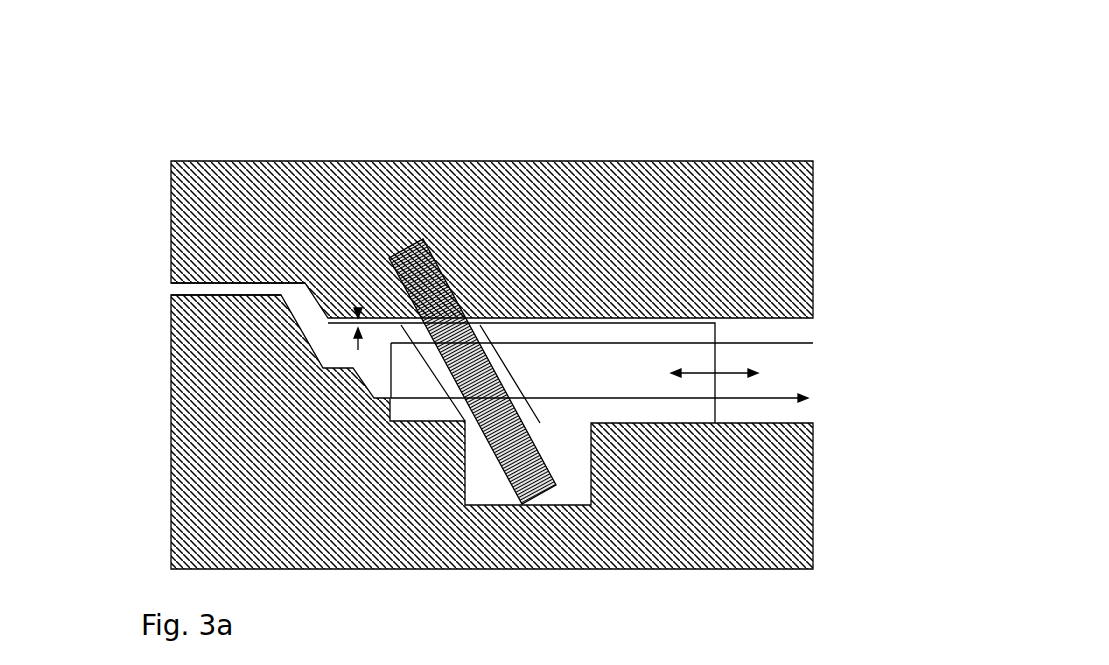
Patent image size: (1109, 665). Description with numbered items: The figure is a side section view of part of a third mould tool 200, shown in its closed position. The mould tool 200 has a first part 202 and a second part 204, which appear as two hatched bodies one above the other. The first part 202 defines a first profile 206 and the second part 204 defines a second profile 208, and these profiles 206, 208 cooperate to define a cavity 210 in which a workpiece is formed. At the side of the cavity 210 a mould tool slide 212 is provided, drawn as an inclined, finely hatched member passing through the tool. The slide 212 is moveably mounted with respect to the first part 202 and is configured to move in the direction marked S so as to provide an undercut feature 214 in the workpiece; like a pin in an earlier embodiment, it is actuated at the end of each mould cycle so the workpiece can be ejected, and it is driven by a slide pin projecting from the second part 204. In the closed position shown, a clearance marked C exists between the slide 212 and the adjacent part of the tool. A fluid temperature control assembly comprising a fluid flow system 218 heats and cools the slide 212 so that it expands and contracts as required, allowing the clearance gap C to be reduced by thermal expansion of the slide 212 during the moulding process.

The third mould tool 200 is at (481, 330).
The first part 202 is at (129, 417).
The second part 204 is at (132, 184).
The first profile 206 is at (173, 275).
The second profile 208 is at (163, 317).
The cavity 210 is at (223, 282).
The mould tool slide 212 is at (678, 403).
The undercut feature 214 is at (308, 388).
The fluid flow system 218 is at (787, 337).